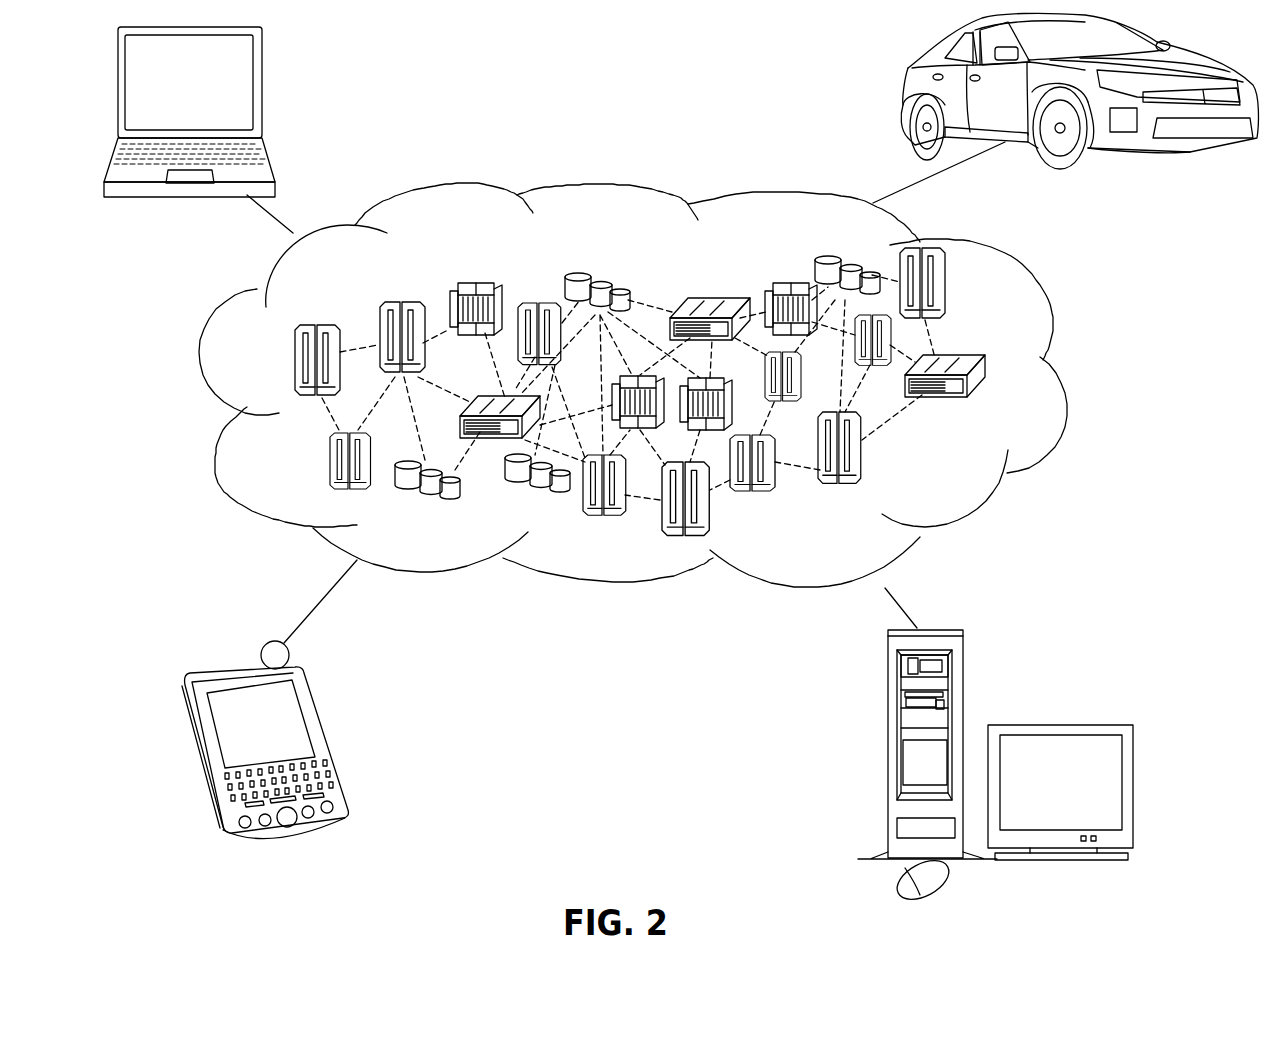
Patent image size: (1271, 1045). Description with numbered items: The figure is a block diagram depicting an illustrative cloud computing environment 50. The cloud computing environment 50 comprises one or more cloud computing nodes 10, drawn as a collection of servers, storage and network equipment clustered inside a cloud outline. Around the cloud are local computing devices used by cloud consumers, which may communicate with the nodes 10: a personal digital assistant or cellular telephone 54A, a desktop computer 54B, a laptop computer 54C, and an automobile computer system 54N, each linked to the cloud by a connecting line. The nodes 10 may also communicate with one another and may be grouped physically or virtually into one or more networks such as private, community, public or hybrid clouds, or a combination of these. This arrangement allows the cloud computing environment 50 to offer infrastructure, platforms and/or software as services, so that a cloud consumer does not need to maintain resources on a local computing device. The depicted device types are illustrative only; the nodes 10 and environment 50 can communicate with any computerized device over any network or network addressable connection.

The cloud computing node 10 is at (962, 476).
The cloud computing environment 50 is at (1058, 372).
The personal digital assistant (PDA) or cellular telephone 54A is at (313, 707).
The desktop computer 54B is at (888, 690).
The laptop computer 54C is at (262, 65).
The automobile computer system 54N is at (903, 80).